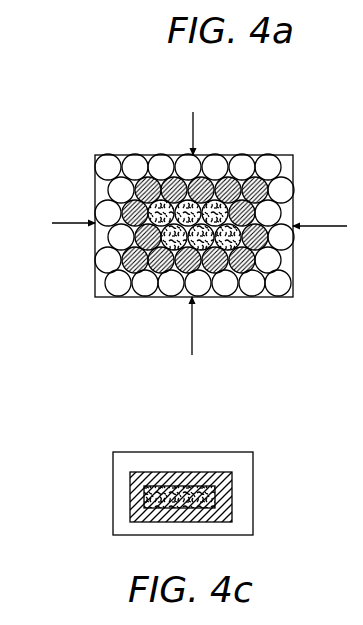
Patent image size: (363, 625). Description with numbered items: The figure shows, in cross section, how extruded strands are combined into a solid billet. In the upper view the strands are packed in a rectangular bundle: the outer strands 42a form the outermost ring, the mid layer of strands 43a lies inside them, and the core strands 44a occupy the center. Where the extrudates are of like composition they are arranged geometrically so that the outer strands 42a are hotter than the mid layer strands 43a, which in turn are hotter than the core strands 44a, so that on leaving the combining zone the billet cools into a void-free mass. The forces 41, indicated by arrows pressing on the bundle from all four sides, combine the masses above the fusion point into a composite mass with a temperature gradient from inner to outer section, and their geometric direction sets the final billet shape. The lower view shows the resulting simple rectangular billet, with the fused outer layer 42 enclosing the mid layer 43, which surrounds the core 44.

In FIG. 4a, the forces 41 is at (199, 218).
In FIG. 4a, the outer strands 42a is at (270, 168).
In FIG. 4a, the mid layer strands 43a is at (258, 193).
In FIG. 4a, the core strands 44a is at (240, 238).
In FIG. 4c, the outer layer 42 is at (238, 452).
In FIG. 4c, the mid layer 43 is at (232, 480).
In FIG. 4c, the core 44 is at (215, 498).